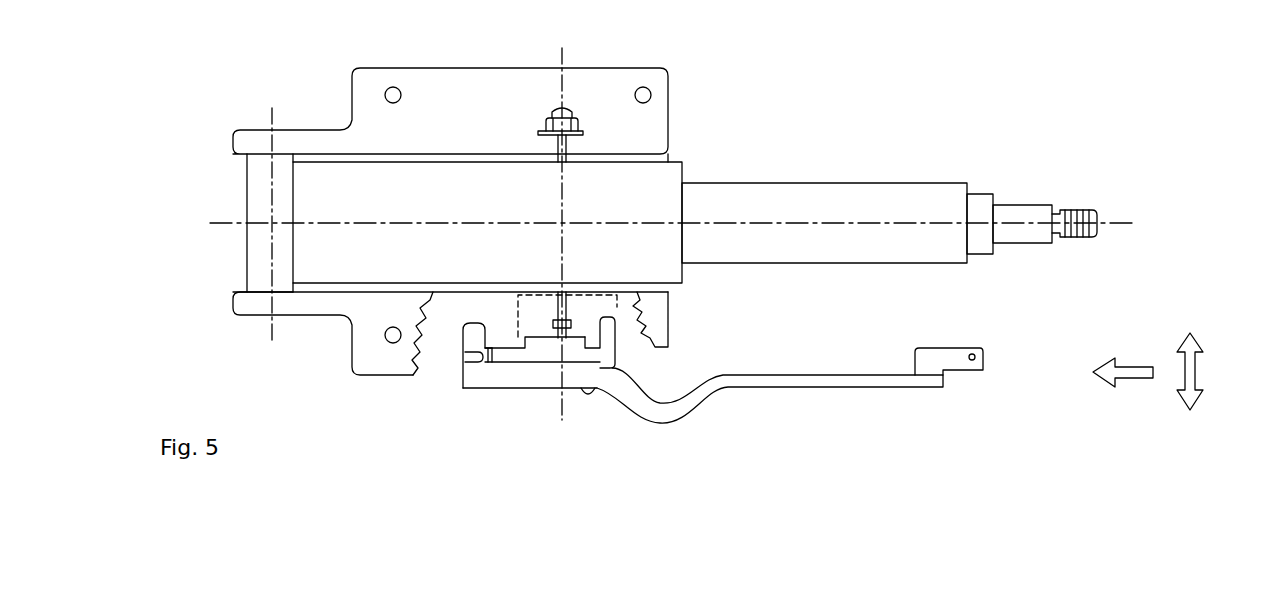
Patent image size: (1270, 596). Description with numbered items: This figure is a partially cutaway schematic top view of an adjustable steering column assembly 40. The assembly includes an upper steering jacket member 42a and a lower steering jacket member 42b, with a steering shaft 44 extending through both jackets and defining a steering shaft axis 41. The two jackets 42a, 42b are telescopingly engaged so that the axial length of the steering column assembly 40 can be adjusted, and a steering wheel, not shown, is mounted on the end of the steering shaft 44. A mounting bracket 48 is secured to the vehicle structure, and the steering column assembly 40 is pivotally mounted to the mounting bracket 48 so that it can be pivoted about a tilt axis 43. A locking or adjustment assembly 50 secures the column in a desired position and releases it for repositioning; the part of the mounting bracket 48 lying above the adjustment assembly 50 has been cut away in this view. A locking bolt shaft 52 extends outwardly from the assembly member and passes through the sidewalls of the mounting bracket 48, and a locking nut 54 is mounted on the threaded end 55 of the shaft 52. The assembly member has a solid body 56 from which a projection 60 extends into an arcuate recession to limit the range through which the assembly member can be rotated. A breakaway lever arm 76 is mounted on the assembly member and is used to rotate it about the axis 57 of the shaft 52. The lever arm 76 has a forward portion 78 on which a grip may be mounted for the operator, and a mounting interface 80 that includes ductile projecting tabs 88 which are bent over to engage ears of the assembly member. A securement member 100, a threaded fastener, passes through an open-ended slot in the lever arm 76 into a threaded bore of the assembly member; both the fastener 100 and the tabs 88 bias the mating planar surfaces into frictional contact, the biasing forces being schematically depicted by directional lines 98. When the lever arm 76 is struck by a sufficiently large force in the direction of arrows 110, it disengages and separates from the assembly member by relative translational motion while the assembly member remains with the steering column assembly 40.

The adjustable steering column assembly 40 is at (915, 130).
The steering shaft axis 41 is at (728, 221).
The upper steering jacket member 42a is at (833, 190).
The lower steering jacket member 42b is at (333, 172).
The tilt axis 43 is at (272, 325).
The steering shaft 44 is at (1025, 238).
The mounting bracket 48 is at (455, 83).
The locking or adjustment assembly 50 is at (525, 300).
The locking bolt shaft 52 is at (557, 310).
The locking nut 54 is at (545, 126).
The threaded end 55 is at (566, 147).
The solid body 56 is at (548, 353).
The axis of shaft 57 is at (557, 58).
The projection 60 is at (612, 325).
The breakaway lever arm 76 is at (845, 391).
The forward portion 78 is at (875, 378).
The mounting interface 80 is at (468, 385).
The ductile projecting tabs 88 is at (462, 349).
The directional lines 98 is at (1195, 370).
The securement member 100 is at (586, 392).
The arrows 110 is at (1128, 372).